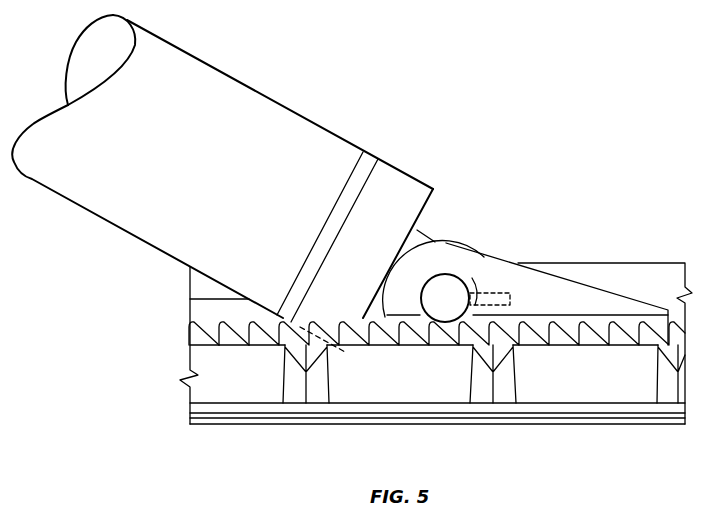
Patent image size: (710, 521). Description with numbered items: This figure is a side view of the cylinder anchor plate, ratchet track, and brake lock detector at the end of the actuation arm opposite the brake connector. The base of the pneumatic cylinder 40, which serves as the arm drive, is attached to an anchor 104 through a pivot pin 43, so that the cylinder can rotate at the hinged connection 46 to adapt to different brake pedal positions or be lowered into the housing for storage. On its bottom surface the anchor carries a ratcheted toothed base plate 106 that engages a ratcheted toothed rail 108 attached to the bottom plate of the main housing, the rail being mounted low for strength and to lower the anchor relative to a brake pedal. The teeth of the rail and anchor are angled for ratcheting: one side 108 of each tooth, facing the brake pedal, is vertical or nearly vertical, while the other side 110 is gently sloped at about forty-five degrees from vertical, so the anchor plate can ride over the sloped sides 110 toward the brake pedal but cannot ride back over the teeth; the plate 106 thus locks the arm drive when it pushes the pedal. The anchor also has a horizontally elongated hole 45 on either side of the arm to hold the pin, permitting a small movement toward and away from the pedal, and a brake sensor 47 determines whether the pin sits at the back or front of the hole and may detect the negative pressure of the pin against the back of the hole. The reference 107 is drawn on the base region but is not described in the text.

The pneumatic cylinder 40 is at (268, 97).
The pivot pin 43 is at (453, 290).
The hole 45 is at (502, 292).
The hinged connection 46 is at (433, 241).
The brake sensor 47 is at (522, 262).
The anchor 104 is at (610, 290).
The ratcheted toothed base plate 106 is at (549, 328).
The base plate 107 is at (280, 417).
The ratcheted toothed rail 108 is at (189, 305).
The sloped side 110 is at (242, 322).